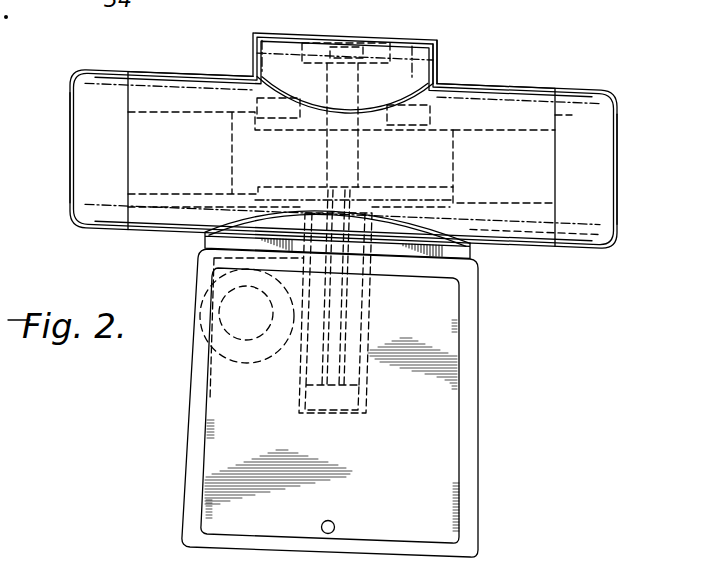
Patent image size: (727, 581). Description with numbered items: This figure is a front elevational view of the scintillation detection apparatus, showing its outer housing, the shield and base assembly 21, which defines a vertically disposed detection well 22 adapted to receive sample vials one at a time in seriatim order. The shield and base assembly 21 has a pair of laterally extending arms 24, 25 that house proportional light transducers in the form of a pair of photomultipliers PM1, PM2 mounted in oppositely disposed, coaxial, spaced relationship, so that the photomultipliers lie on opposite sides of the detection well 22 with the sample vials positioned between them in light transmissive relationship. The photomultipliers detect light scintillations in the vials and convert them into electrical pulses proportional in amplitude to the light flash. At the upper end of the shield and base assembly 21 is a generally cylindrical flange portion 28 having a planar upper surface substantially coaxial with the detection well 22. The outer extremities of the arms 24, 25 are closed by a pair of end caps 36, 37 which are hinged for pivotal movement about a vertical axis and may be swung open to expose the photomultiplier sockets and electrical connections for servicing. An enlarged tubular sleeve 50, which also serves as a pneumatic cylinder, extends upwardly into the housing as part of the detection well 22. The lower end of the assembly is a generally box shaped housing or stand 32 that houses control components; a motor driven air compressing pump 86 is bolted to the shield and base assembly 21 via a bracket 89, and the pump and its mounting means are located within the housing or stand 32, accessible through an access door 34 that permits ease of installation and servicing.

The shield and base assembly 21 is at (520, 252).
The detection well 22 is at (345, 35).
The laterally extending arm 24 is at (172, 50).
The laterally extending arm 25 is at (490, 78).
The cylindrical flange portion 28 is at (437, 60).
The housing or stand 32 is at (186, 442).
The access door 34 is at (213, 492).
The end cap 36 is at (72, 124).
The end cap 37 is at (618, 124).
The tubular sleeve 50 is at (366, 380).
The motor driven air compressing pump 86 is at (257, 340).
The bracket 89 is at (235, 357).
The photomultiplier PM1 is at (252, 127).
The photomultiplier PM2 is at (428, 140).